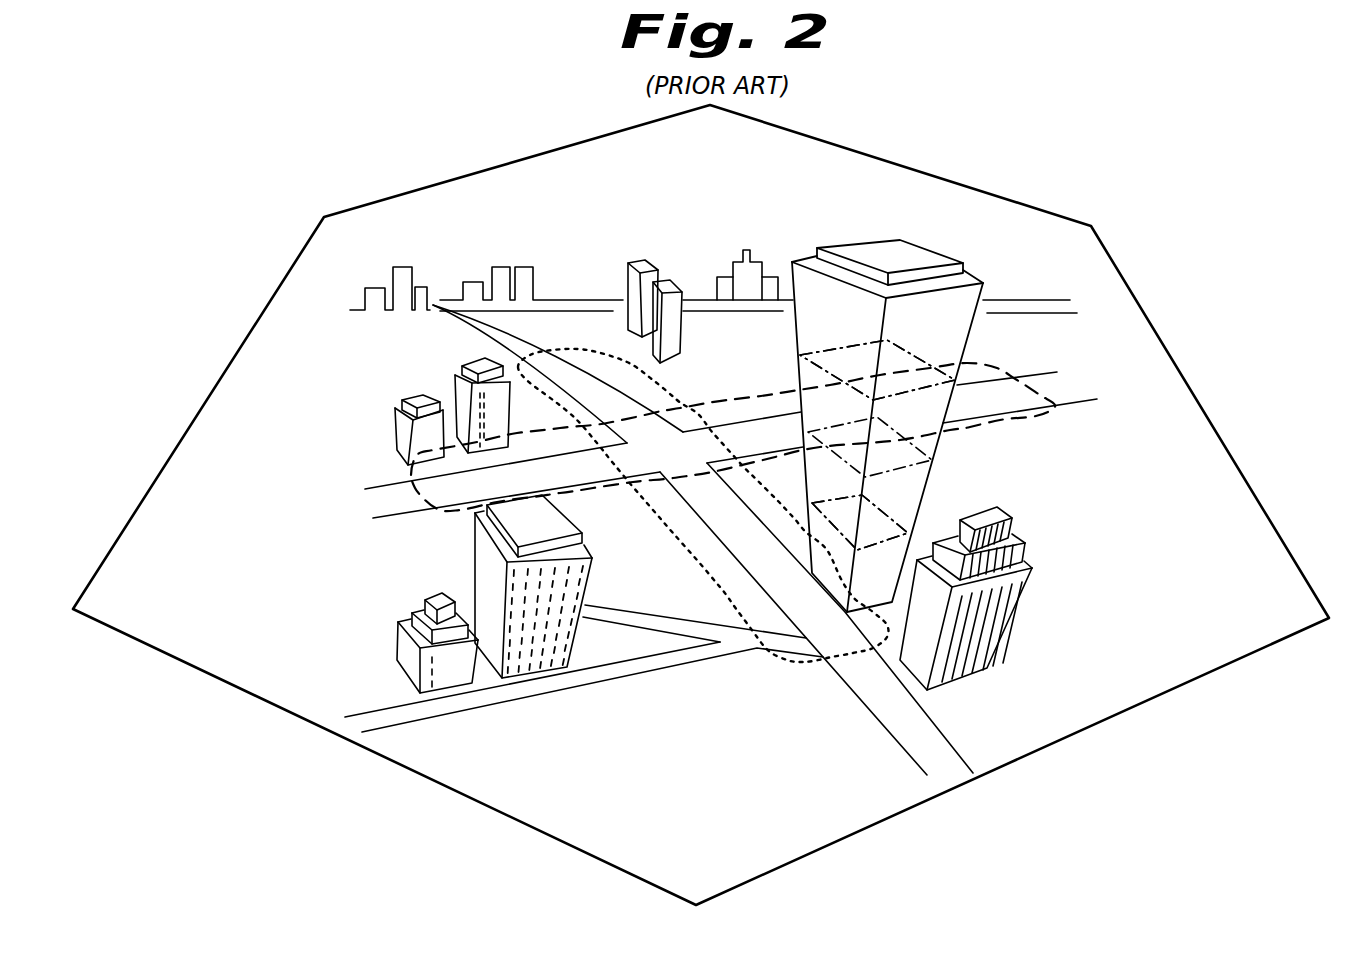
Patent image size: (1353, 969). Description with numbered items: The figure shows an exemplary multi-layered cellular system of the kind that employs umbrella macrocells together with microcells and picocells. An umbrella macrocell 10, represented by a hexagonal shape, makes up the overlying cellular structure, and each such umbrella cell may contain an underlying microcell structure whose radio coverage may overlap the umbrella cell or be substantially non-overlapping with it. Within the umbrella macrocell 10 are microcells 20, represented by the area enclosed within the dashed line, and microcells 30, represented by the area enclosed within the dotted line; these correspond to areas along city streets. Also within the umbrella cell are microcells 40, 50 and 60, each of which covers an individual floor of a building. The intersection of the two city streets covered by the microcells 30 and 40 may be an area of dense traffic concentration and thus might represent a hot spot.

The umbrella macrocell 10 is at (470, 797).
The microcells 20 is at (581, 352).
The microcells 30 is at (412, 478).
The microcell 40 is at (963, 365).
The microcell 50 is at (930, 457).
The microcell 60 is at (862, 550).